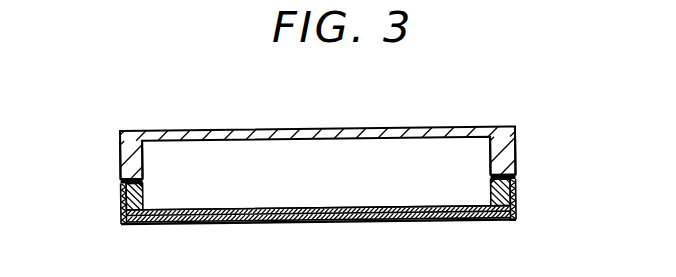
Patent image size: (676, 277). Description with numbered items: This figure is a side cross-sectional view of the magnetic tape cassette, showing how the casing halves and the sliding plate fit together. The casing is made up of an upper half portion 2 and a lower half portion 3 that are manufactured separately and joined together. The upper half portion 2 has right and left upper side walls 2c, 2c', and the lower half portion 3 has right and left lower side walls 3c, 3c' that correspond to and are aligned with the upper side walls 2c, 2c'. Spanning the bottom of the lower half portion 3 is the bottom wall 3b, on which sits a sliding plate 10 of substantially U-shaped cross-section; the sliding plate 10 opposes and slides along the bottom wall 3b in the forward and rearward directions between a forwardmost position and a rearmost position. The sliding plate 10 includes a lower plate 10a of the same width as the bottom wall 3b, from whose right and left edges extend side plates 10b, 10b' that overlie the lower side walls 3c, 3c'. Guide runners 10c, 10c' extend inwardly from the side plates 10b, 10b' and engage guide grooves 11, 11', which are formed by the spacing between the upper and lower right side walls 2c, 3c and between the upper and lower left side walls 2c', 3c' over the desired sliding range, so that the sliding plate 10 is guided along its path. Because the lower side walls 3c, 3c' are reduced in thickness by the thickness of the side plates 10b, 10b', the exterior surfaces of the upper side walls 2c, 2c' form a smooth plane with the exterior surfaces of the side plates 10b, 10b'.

The upper half portion 2 is at (298, 131).
The right upper side wall 2c is at (529, 148).
The left upper side wall 2c' is at (104, 153).
The lower half portion 3 is at (206, 225).
The bottom wall 3b is at (300, 210).
The right lower side wall 3c is at (472, 191).
The left lower side wall 3c' is at (167, 193).
The sliding plate 10 is at (322, 226).
The lower plate 10a is at (416, 226).
The right side plate 10b is at (545, 203).
The left side plate 10b' is at (95, 210).
The right guide runner 10c is at (464, 163).
The left guide runner 10c' is at (167, 167).
The right guide groove 11 is at (528, 184).
The left guide groove 11' is at (103, 190).